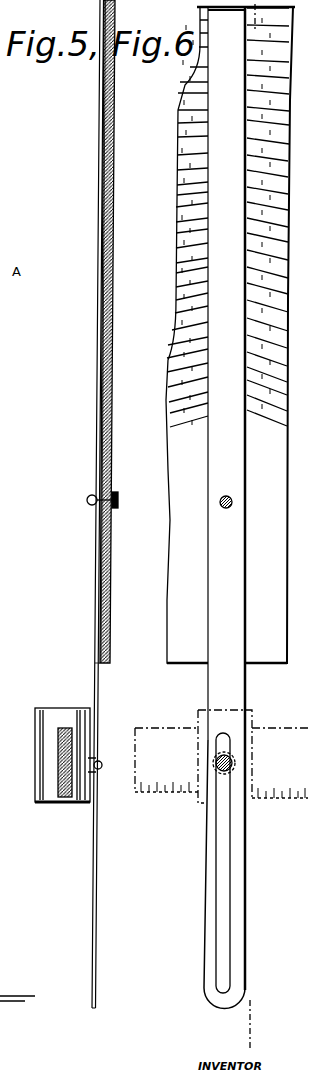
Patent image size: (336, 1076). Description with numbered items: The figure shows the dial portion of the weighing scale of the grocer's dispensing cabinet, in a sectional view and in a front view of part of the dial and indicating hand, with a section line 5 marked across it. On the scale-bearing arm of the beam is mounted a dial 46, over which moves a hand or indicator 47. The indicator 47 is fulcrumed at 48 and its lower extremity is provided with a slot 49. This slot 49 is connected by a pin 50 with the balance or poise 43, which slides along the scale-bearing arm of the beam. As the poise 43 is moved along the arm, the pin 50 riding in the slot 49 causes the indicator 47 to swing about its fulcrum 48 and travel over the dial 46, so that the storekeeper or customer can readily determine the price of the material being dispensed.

In FIG. 5, the balance or poise 43 is at (35, 767).
In FIG. 5, the dial 46 is at (112, 401).
In FIG. 6, the dial 46 is at (170, 450).
In FIG. 5, the hand or indicator 47 is at (97, 433).
In FIG. 6, the hand or indicator 47 is at (213, 185).
In FIG. 6, the fulcrum 48 is at (232, 502).
In FIG. 6, the slot 49 is at (232, 838).
In FIG. 5, the pin 50 is at (108, 761).
In FIG. 6, the pin 50 is at (213, 770).
In FIG. 6, the section line 5- 5 is at (265, 1039).